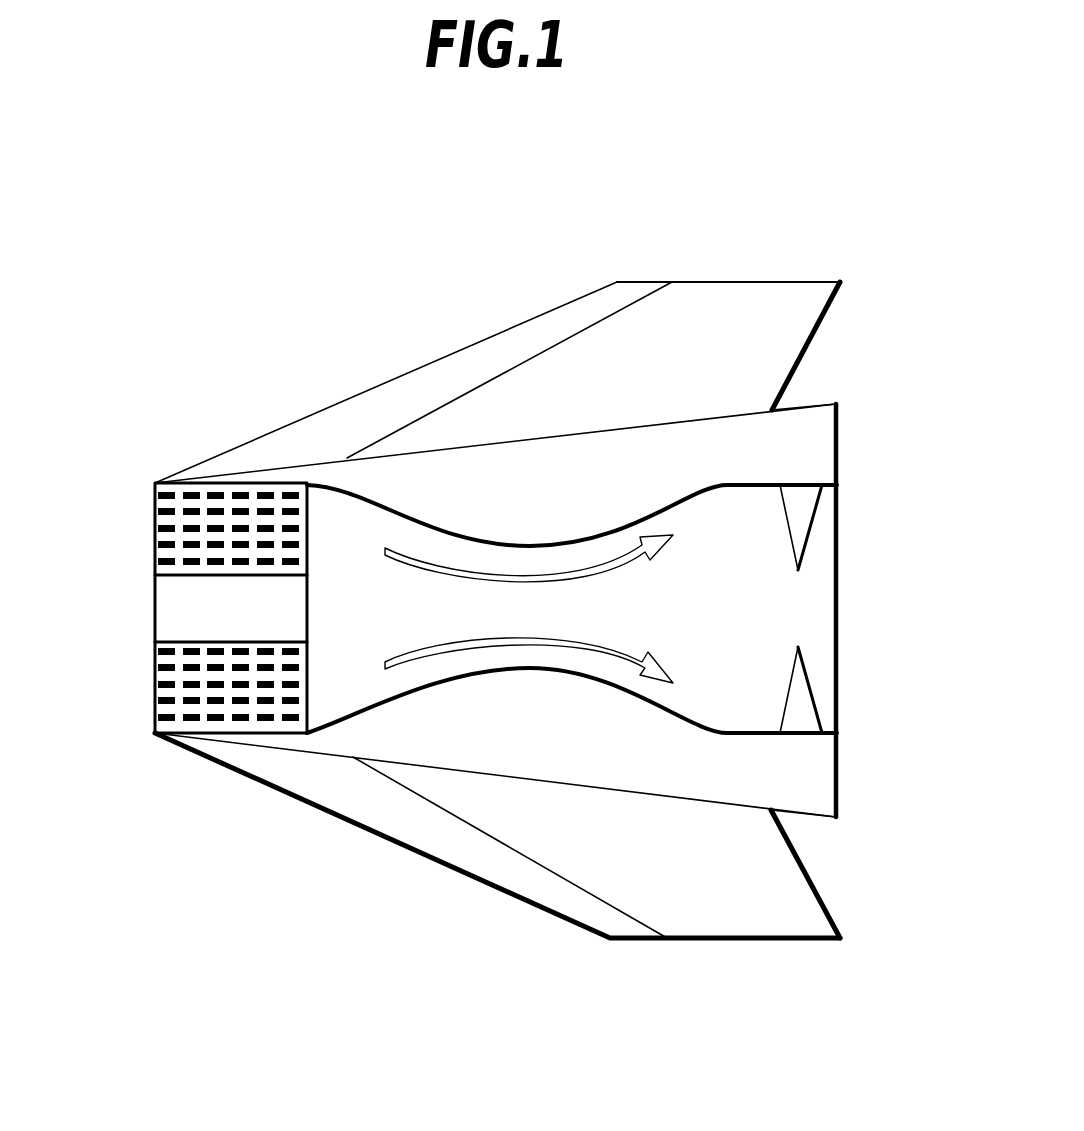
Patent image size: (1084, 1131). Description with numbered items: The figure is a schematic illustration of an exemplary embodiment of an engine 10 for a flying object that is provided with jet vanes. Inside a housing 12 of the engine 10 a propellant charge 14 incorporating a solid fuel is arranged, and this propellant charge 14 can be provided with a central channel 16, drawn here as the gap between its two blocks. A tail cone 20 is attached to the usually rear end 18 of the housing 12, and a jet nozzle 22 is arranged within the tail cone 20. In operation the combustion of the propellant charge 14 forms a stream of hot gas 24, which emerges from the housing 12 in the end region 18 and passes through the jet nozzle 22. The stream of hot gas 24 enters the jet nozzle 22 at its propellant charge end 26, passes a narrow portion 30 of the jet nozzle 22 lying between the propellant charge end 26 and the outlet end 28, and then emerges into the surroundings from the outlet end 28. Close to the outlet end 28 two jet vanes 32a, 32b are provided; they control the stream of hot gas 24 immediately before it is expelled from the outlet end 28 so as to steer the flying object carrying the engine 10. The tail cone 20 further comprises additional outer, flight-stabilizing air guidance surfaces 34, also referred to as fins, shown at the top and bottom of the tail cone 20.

The engine 10 is at (497, 583).
The housing 12 is at (243, 735).
The propellant charge 14 is at (165, 677).
The central channel 16 is at (170, 603).
The rear end 18 is at (308, 558).
The tail cone 20 is at (802, 460).
The jet nozzle 22 is at (750, 627).
The stream of hot gas 24 is at (525, 636).
The propellant charge end 26 is at (308, 667).
The outlet end 28 is at (838, 568).
The narrow portion 30 is at (528, 548).
The jet vane 32a is at (797, 527).
The jet vane 32b is at (793, 707).
The air guidance surfaces 34 is at (773, 295).